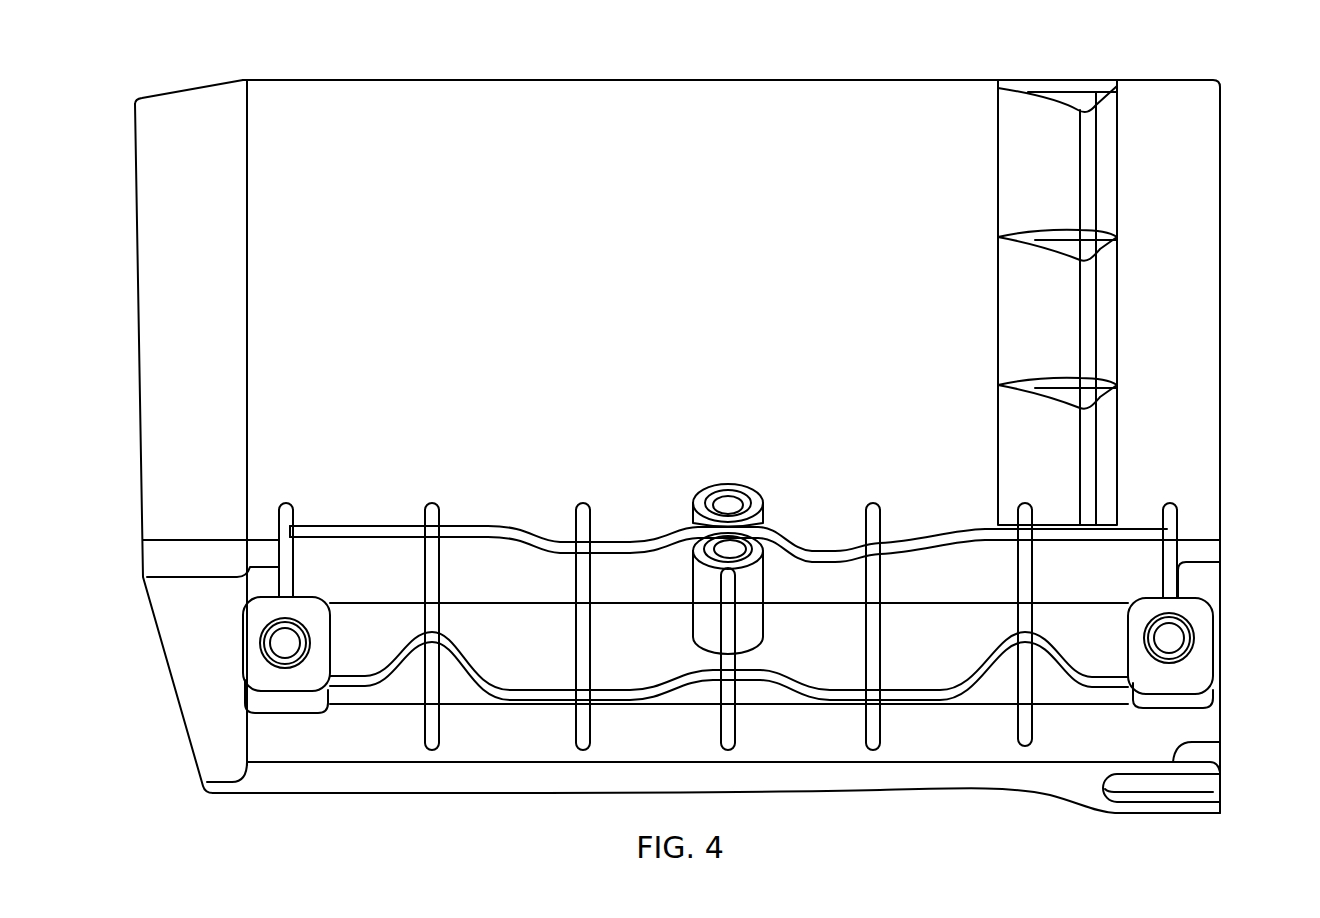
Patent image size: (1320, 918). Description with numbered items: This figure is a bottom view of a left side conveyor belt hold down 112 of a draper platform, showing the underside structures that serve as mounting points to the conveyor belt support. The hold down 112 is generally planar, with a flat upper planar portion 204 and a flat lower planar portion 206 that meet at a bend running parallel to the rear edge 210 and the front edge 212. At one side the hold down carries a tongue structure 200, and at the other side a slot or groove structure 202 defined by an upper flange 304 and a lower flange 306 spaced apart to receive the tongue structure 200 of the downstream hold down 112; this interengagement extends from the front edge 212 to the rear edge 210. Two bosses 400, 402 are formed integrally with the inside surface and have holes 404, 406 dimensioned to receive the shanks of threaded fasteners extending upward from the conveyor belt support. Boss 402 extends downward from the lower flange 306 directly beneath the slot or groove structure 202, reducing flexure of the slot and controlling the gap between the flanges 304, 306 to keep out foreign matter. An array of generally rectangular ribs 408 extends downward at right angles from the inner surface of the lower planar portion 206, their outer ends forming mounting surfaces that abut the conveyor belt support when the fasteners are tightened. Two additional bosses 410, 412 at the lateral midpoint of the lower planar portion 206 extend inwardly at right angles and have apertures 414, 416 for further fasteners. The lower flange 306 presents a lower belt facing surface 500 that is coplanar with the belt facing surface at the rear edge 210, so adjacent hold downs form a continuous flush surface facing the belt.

The conveyor belt hold down 112 is at (893, 58).
The tongue structure 200 is at (157, 674).
The slot or groove structure 202 is at (1103, 823).
The flat upper planar portion 204 is at (606, 296).
The flat lower planar portion 206 is at (540, 646).
The rear edge 210 is at (622, 80).
The front edge 212 is at (558, 793).
The upper flange 304 is at (1155, 813).
The lower flange 306 is at (1172, 758).
The boss 400 is at (310, 608).
The boss 402 is at (1183, 622).
The hole 404 is at (285, 647).
The hole 406 is at (1172, 640).
The ribs 408 is at (457, 527).
The boss 410 is at (734, 492).
The boss 412 is at (700, 617).
The aperture 414 is at (720, 505).
The aperture 416 is at (735, 552).
The lower belt facing surface 500 is at (1172, 728).